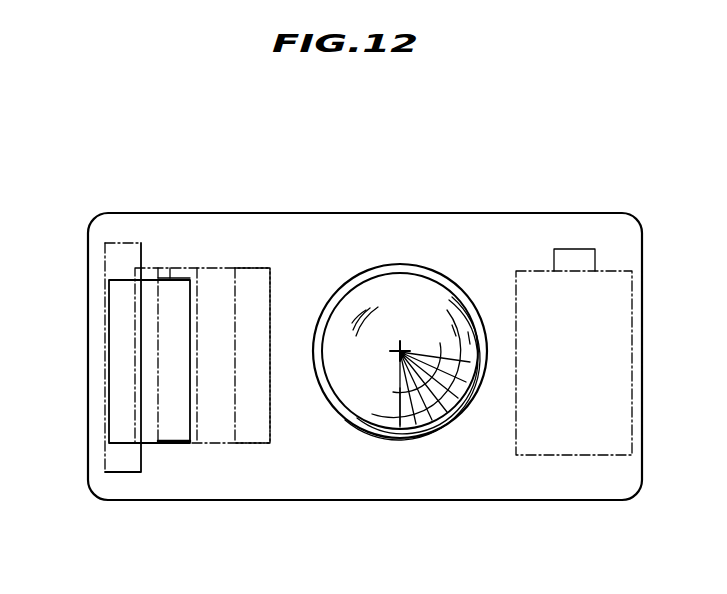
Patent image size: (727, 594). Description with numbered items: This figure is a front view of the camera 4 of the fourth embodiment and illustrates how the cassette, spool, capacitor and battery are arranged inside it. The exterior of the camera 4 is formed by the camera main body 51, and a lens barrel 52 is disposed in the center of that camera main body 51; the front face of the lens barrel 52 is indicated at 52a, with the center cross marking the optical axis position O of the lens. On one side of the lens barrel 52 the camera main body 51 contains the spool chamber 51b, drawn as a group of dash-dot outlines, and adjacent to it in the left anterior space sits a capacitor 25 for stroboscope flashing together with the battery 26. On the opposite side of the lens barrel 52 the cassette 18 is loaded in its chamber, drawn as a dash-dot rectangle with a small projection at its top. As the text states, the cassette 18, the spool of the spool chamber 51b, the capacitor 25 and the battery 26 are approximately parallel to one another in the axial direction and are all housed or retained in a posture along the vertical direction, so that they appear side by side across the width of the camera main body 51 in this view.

The camera 4 is at (570, 185).
The cassette 18 is at (568, 455).
The capacitor 25 is at (122, 472).
The battery 26 is at (105, 400).
The camera main body 51 is at (493, 500).
The spool chamber 51b is at (250, 443).
The lens barrel 52 is at (400, 365).
The lens surface 52a is at (428, 300).
The optical center O is at (400, 353).